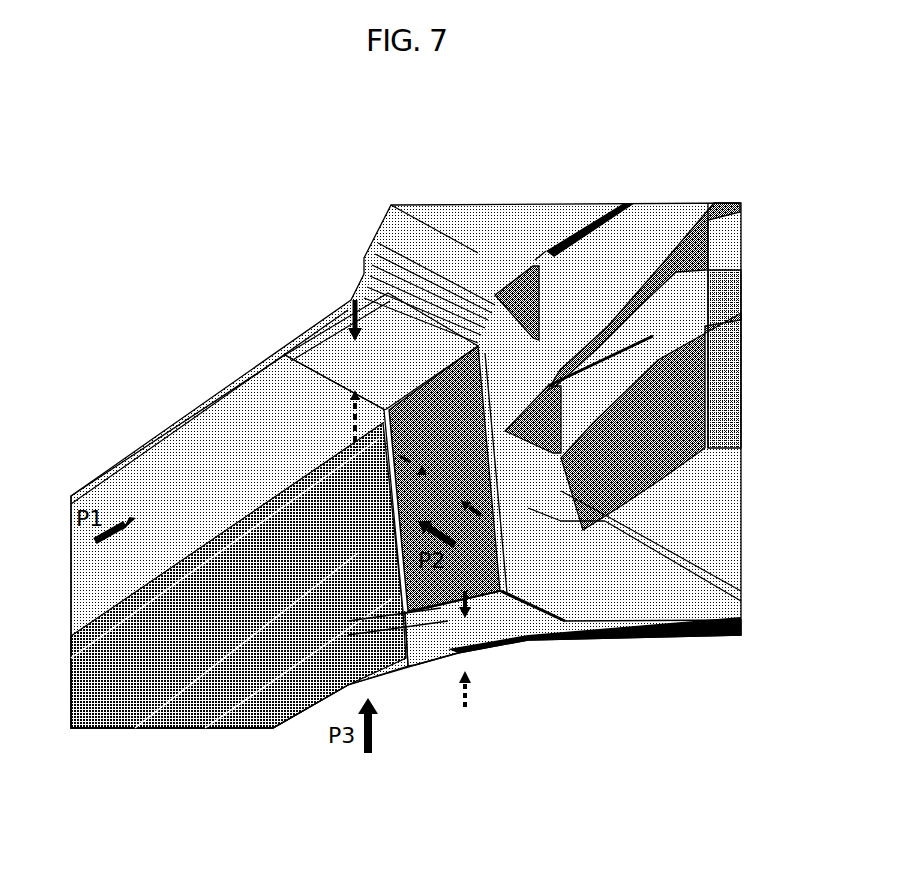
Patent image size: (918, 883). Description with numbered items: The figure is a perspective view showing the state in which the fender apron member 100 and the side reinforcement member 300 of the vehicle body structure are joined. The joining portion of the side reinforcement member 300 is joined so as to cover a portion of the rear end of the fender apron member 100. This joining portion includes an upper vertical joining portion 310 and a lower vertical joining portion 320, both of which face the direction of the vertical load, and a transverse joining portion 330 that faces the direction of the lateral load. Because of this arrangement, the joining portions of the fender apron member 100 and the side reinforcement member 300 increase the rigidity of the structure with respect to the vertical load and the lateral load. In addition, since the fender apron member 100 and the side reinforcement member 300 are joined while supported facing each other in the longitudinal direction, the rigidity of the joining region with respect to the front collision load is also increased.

The fender apron member 100 is at (150, 411).
The side reinforcement member 300 is at (566, 190).
The upper vertical joining portion 310 is at (320, 338).
The lower vertical joining portion 320 is at (478, 614).
The transverse joining portion 330 is at (403, 488).